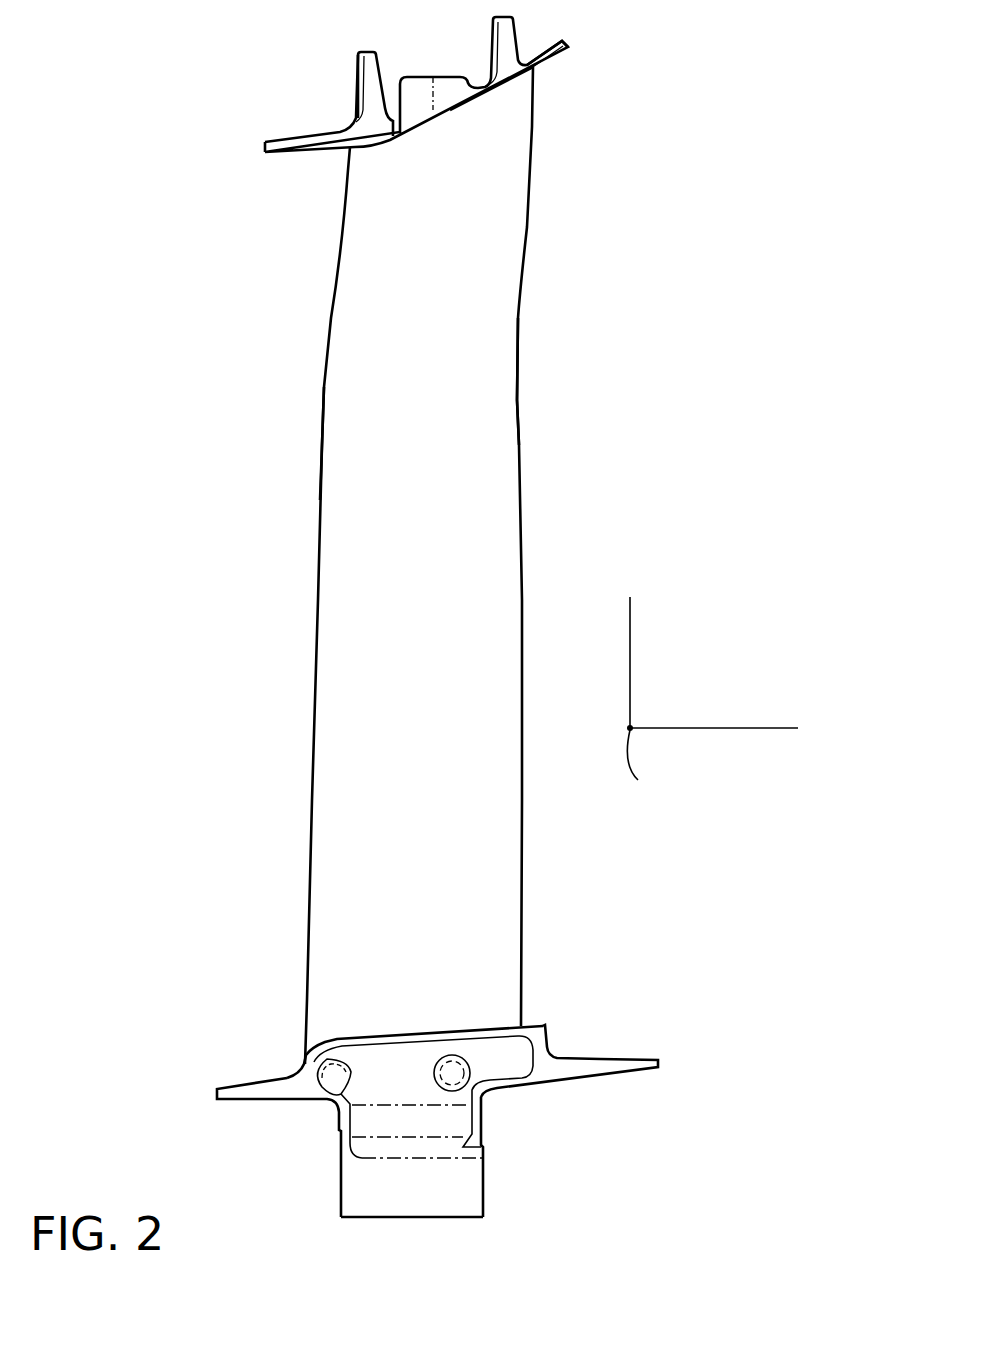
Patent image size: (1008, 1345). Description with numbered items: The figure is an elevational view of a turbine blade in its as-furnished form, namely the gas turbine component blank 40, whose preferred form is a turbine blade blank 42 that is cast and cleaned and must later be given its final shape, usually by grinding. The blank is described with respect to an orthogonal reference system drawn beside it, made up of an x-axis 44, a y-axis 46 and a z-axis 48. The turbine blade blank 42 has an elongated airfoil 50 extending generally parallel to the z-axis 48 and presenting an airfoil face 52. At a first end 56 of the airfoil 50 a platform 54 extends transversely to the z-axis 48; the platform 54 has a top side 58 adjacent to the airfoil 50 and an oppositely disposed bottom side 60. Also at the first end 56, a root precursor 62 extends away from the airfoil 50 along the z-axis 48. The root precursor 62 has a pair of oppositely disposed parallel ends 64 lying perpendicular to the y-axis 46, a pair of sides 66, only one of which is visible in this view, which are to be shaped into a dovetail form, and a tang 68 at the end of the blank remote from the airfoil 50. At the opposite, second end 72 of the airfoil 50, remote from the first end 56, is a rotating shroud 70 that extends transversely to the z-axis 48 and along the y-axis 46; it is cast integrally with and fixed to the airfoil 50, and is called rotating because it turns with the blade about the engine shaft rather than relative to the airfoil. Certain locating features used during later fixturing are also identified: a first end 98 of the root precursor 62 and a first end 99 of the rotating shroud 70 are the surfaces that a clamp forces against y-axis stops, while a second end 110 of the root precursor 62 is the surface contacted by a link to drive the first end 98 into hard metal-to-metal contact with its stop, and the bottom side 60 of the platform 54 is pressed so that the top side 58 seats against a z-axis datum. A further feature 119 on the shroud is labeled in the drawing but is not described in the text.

The gas turbine component blank 40 is at (214, 36).
The turbine blade blank 42 is at (312, 347).
The x-axis 44 is at (630, 728).
The y-axis 46 is at (740, 728).
The z-axis 48 is at (630, 647).
The airfoil 50 is at (350, 450).
The airfoil face 52 is at (398, 508).
The platform 54 is at (217, 1095).
The first end of the airfoil 56 is at (303, 1047).
The top side of the platform 58 is at (605, 1053).
The bottom side of the platform 60 is at (630, 1073).
The root precursor 62 is at (463, 1173).
The parallel ends of the root precursor 64 is at (340, 1163).
The sides of the root precursor 66 is at (423, 1195).
The tang 68 is at (400, 1217).
The rotating shroud 70 is at (337, 127).
The second end of the airfoil 72 is at (505, 98).
The first end of the root precursor 98 is at (341, 1200).
The first end of the rotating shroud 99 is at (265, 143).
The second end of the root precursor 110 is at (488, 1208).
The tip shroud aft flange 119 is at (570, 46).